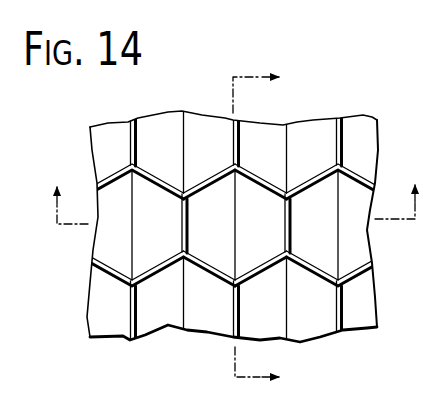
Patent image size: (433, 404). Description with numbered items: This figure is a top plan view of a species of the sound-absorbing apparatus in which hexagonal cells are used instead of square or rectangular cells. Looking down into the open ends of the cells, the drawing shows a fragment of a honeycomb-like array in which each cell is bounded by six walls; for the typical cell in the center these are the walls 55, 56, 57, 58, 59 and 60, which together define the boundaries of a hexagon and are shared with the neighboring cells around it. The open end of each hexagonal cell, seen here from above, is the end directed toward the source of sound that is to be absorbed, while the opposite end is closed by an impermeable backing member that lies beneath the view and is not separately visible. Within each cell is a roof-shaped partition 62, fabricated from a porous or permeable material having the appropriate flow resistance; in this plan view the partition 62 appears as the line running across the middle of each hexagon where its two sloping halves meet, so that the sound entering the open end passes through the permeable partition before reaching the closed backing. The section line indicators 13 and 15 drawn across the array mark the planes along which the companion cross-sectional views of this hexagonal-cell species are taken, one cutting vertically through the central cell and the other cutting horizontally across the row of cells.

The section line 13- 13 is at (267, 228).
The section line 15- 15 is at (235, 191).
The wall 55 is at (178, 206).
The wall 56 is at (201, 176).
The wall 57 is at (246, 166).
The wall 58 is at (295, 200).
The wall 59 is at (265, 276).
The wall 60 is at (225, 285).
The roof-shaped partition 62 is at (235, 226).